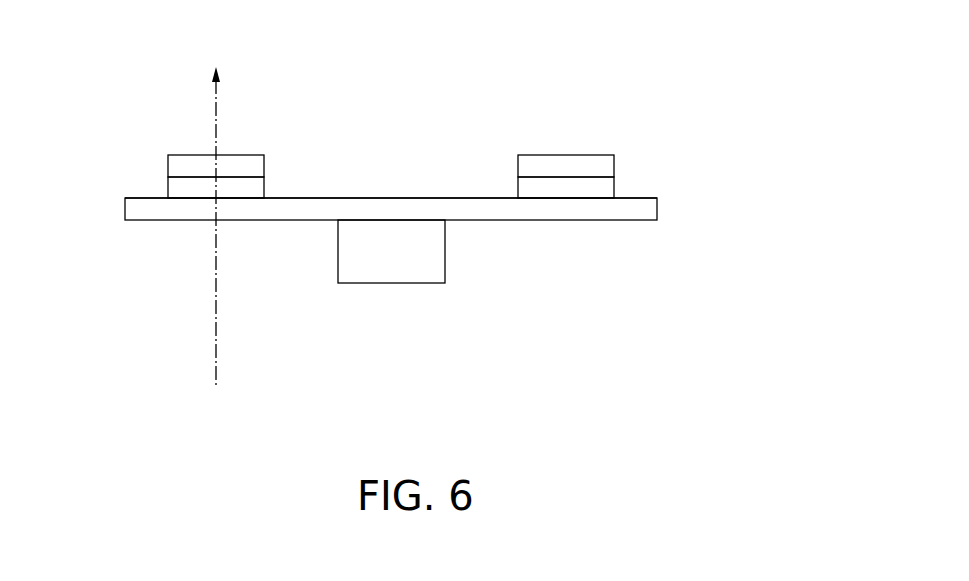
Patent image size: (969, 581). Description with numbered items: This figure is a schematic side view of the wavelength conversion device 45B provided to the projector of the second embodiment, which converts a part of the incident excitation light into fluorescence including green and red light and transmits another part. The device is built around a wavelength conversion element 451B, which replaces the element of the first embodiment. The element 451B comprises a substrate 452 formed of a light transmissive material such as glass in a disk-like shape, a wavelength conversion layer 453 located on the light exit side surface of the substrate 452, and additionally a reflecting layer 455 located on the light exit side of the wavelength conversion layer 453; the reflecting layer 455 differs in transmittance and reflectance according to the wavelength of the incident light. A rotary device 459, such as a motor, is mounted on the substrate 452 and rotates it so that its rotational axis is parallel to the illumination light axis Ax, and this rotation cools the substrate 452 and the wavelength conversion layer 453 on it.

The wavelength conversion device 45B is at (665, 69).
The wavelength conversion element 451B is at (657, 208).
The substrate 452 is at (624, 210).
The wavelength conversion layer 453 is at (173, 187).
The reflecting layer 455 is at (180, 166).
The rotary device 459 is at (445, 255).
The illumination light axis Ax is at (214, 320).